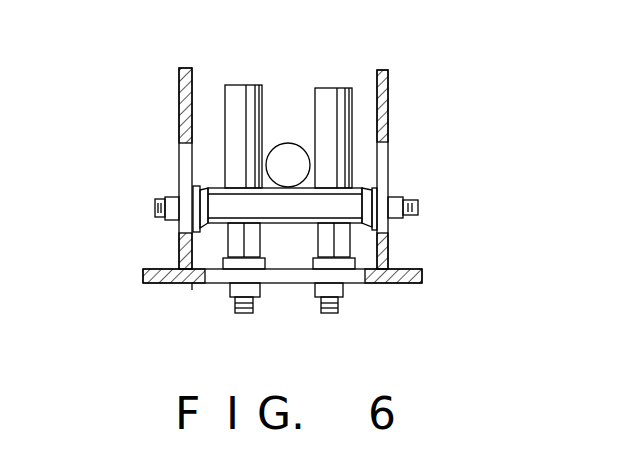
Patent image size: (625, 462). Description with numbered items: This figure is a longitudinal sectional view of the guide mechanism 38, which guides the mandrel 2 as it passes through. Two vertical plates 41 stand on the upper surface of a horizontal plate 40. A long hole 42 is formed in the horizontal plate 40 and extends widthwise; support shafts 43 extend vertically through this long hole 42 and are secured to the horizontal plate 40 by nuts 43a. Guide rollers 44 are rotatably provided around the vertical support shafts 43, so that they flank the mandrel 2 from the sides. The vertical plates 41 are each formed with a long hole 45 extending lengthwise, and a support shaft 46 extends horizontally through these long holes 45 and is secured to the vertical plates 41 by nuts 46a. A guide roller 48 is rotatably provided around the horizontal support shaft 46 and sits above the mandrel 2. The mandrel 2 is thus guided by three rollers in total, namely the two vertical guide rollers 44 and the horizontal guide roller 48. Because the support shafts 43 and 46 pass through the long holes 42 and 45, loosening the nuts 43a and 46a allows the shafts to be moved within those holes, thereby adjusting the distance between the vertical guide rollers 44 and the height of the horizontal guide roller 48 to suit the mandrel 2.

The mandrel 2 is at (283, 142).
The guide mechanism 38 is at (394, 79).
The horizontal plate 40 is at (422, 275).
The vertical plates 41 is at (178, 83).
The long hole 42 is at (210, 283).
The support shafts 43 is at (218, 258).
The nuts 43a is at (232, 294).
The guide rollers 44 is at (224, 117).
The long holes 45 is at (178, 160).
The support shaft 46 is at (155, 207).
The nuts 46a is at (192, 226).
The guide roller 48 is at (295, 219).